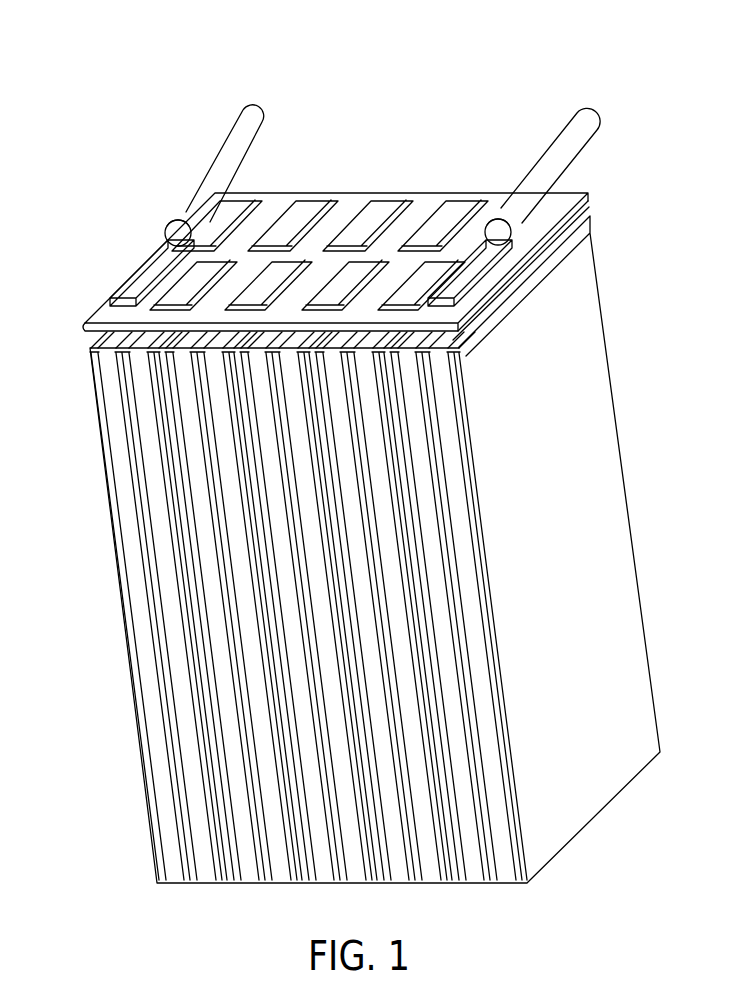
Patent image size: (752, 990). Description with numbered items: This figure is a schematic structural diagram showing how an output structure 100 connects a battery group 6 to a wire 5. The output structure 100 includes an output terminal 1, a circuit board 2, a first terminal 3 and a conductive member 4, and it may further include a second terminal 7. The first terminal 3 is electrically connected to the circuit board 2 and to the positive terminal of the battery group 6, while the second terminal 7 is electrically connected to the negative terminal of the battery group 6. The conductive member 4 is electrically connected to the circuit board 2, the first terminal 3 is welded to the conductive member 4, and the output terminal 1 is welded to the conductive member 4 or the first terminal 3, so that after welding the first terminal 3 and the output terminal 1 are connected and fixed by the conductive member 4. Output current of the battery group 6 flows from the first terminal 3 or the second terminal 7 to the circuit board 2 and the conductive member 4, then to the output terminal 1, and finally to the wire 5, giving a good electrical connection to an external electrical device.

The output structure 100 is at (195, 50).
The output terminal 1 is at (143, 257).
The circuit board 2 is at (88, 325).
The first terminal 3 is at (115, 306).
The conductive member 4 is at (164, 230).
The wire 5 is at (597, 121).
The battery group 6 is at (598, 412).
The second terminal 7 is at (478, 270).